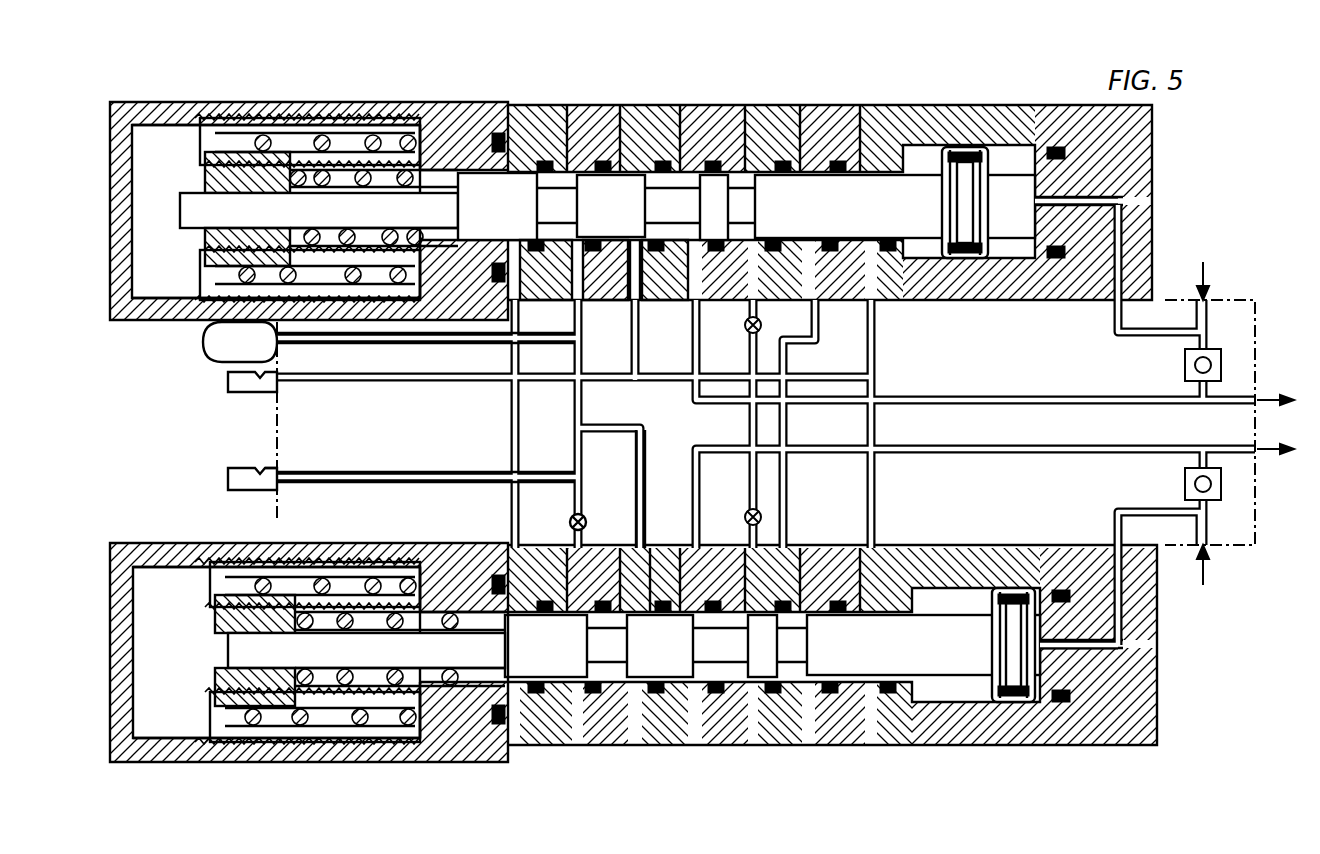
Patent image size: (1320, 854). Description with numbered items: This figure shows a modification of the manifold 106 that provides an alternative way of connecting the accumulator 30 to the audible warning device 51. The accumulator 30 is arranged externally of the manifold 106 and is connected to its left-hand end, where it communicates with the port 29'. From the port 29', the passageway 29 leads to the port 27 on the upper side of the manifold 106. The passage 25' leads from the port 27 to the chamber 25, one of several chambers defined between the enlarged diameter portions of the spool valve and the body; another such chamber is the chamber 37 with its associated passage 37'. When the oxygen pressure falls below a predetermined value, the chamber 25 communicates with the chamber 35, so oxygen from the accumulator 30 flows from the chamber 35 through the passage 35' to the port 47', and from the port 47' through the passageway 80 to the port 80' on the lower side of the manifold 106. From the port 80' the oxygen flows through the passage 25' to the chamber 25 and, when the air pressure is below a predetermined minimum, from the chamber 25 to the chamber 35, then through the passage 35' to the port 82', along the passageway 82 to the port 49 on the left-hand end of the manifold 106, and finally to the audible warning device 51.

The chamber 25 is at (652, 428).
The passage 25' is at (687, 374).
The port 27 is at (647, 300).
The passageway 29 is at (452, 353).
The port 29' is at (307, 355).
The accumulator 30 is at (212, 350).
The chamber 35 is at (546, 434).
The passage 35' is at (611, 367).
The chamber 37 is at (497, 210).
The passage 37' is at (546, 288).
The port 47' is at (607, 288).
The port 49 is at (280, 470).
The audible warning device 51 is at (238, 484).
The passageway 80 is at (662, 489).
The port 80' is at (672, 551).
The passageway 82 is at (426, 454).
The port 82' is at (559, 518).
The manifold 106 is at (290, 424).